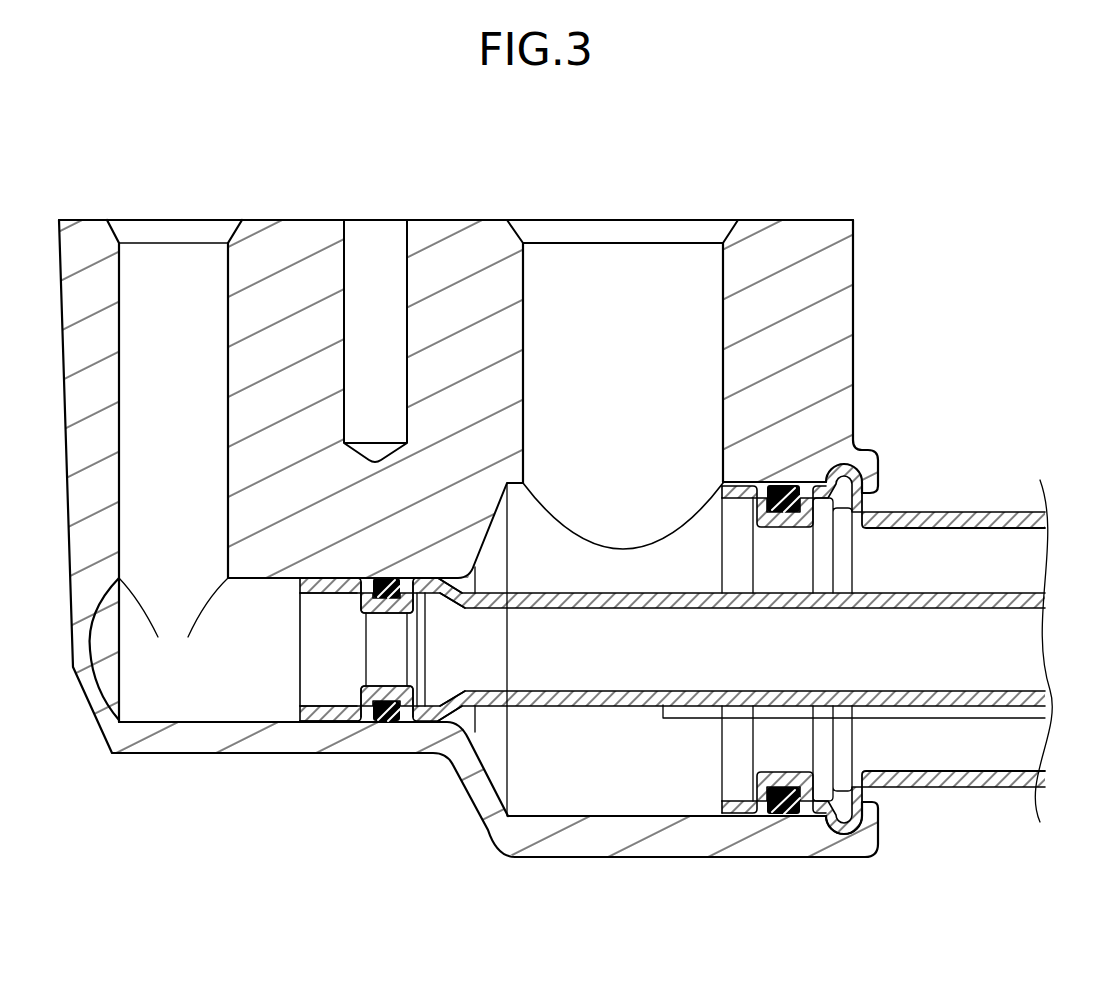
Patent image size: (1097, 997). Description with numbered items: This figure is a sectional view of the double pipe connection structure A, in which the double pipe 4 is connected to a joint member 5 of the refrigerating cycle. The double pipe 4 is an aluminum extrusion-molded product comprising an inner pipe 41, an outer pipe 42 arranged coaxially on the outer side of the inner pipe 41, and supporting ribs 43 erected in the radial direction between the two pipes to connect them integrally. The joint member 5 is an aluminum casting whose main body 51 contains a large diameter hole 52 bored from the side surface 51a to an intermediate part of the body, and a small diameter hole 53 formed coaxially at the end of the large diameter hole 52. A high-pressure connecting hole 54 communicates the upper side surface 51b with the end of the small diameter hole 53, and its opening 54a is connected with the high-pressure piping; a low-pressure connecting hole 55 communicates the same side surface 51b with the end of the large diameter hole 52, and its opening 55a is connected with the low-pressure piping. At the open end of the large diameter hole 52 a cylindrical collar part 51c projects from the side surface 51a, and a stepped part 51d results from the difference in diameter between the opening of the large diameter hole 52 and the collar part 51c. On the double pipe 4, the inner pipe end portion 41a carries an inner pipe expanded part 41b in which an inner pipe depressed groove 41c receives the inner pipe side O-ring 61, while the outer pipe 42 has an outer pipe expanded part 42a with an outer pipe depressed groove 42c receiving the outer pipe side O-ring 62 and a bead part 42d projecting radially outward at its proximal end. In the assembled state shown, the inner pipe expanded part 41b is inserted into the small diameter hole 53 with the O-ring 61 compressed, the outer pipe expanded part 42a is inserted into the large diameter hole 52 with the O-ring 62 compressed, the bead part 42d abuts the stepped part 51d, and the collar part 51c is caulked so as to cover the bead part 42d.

The double pipe connection structure A is at (833, 192).
The double pipe 4 is at (1003, 510).
The joint member 5 is at (853, 263).
The inner pipe 41 is at (943, 708).
The inner pipe end portion 41a is at (545, 707).
The inner pipe expanded part 41b is at (322, 723).
The inner pipe depressed groove 41c is at (390, 723).
The outer pipe 42 is at (985, 787).
The outer pipe expanded part 42a is at (722, 816).
The outer pipe depressed groove 42c is at (775, 817).
The bead part 42d is at (852, 832).
The supporting rib 43 is at (1032, 718).
The main body 51 is at (447, 220).
The side surface 51a is at (853, 327).
The side surface 51b is at (310, 220).
The collar part 51c is at (878, 455).
The stepped part 51d is at (862, 485).
The large diameter hole 52 is at (590, 816).
The small diameter hole 53 is at (217, 722).
The high-pressure connecting hole 54 is at (121, 243).
The opening 54a is at (121, 343).
The low-pressure connecting hole 55 is at (722, 308).
The opening 55a is at (710, 220).
The inner pipe side O-ring 61 is at (383, 723).
The outer pipe side O-ring 62 is at (766, 815).